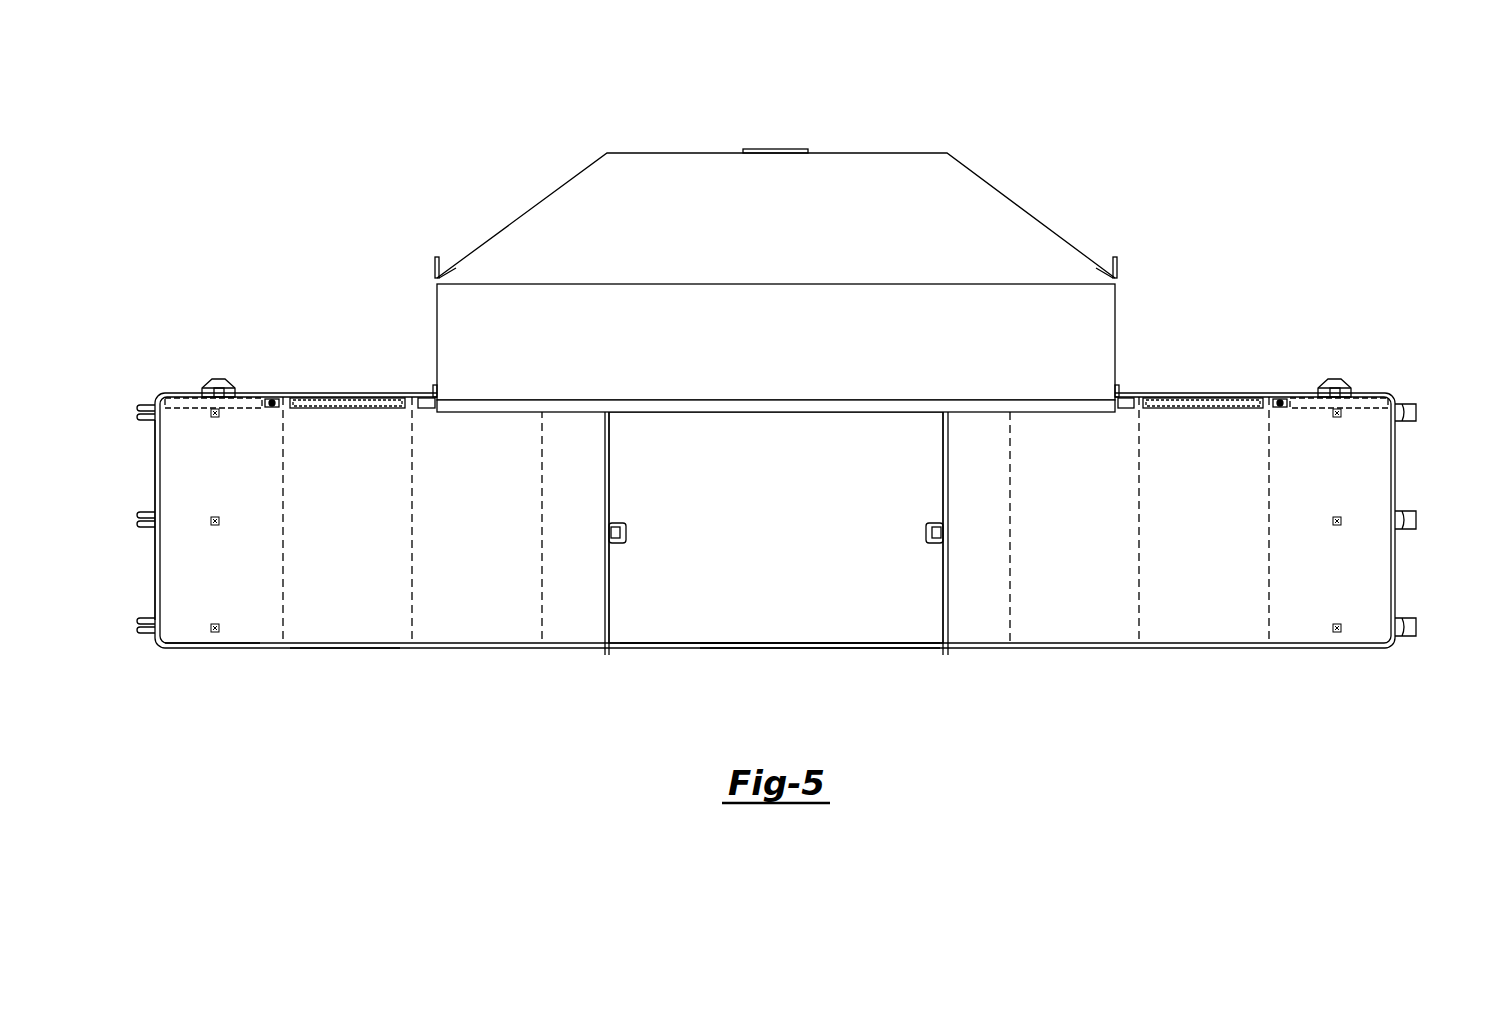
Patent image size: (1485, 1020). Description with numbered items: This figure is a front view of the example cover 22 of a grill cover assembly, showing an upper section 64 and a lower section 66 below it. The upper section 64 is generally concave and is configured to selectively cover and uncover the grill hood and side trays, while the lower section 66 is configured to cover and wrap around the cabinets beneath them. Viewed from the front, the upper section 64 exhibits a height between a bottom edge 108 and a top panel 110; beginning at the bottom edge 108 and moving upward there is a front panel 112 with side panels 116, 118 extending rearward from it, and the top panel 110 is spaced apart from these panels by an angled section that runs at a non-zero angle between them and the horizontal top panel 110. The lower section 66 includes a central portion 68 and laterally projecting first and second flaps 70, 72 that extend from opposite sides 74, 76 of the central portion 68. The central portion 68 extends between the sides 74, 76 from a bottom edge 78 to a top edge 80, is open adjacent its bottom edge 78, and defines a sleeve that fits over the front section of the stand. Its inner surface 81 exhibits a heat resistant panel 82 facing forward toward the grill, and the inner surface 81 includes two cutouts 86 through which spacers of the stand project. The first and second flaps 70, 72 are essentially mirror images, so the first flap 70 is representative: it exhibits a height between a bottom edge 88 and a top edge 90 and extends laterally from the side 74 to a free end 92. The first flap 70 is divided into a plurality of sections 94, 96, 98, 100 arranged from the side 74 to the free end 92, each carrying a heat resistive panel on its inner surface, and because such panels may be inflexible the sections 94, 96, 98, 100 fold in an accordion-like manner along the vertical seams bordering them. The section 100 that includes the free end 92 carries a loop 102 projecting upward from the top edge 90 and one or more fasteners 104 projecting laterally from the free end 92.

The cover 22 is at (783, 401).
The upper section 64 is at (779, 291).
The lower section 66 is at (1428, 576).
The central portion 68 is at (682, 628).
The first flap 70 is at (272, 668).
The second flap 72 is at (1327, 666).
The side 74 is at (603, 452).
The side 76 is at (948, 452).
The bottom edge 78 is at (830, 648).
The top edge 80 is at (786, 420).
The inner surface 81 is at (883, 628).
The heat resistant panel 82 is at (768, 597).
The cutouts 86 is at (613, 523).
The bottom edge 88 is at (315, 648).
The top edge 90 is at (322, 393).
The free end 92 is at (153, 565).
The section 94 is at (567, 620).
The section 96 is at (442, 630).
The section 98 is at (372, 623).
The section 100 is at (182, 620).
The loop 102 is at (217, 377).
The fasteners 104 is at (123, 401).
The bottom edge 108 is at (1062, 413).
The top panel 110 is at (857, 153).
The front panel 112 is at (791, 377).
The side panel 116 is at (437, 317).
The side panel 118 is at (1115, 317).